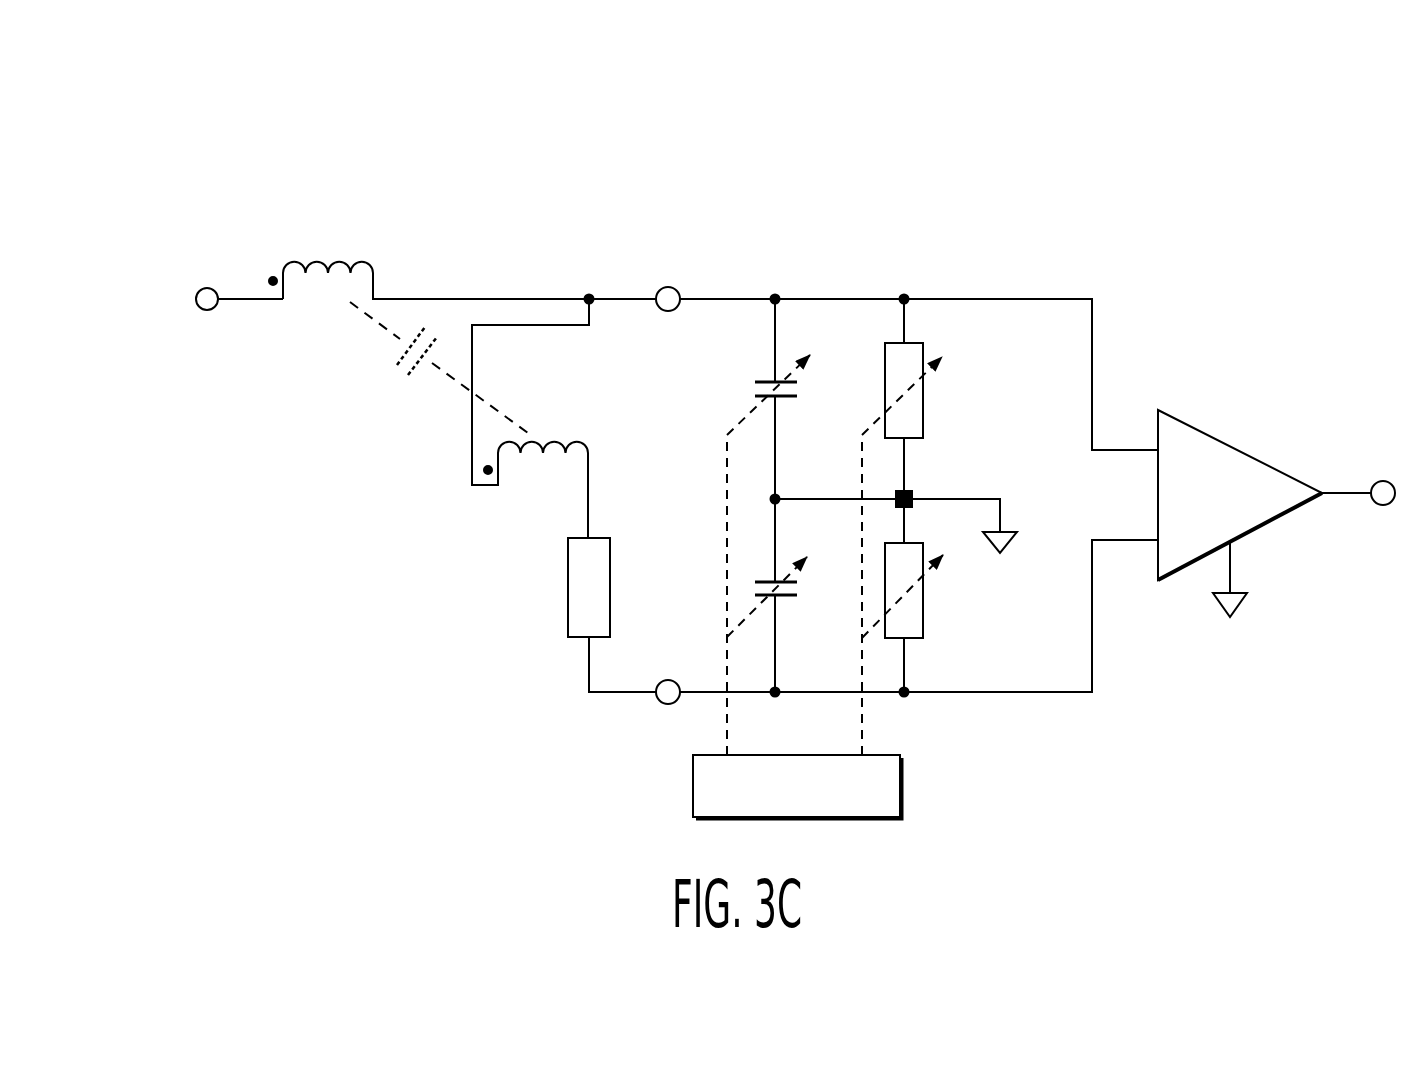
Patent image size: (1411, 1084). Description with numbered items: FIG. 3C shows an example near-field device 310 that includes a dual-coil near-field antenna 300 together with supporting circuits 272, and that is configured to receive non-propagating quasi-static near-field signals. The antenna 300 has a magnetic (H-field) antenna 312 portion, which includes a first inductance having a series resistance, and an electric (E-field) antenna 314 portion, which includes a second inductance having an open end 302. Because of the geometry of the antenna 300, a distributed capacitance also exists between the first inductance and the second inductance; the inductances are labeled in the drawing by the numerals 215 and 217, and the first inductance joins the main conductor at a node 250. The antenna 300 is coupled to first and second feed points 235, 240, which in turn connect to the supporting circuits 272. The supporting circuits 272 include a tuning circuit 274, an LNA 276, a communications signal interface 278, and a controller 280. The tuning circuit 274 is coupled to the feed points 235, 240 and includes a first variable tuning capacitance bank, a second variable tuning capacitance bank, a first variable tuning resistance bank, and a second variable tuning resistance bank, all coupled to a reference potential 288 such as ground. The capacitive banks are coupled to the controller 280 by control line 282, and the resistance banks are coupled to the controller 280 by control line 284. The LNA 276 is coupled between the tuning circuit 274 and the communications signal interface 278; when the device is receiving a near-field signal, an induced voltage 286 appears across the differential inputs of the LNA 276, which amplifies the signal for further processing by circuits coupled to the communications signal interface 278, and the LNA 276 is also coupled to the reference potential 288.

The near-field device 310 is at (165, 135).
The open end 302 is at (205, 288).
The dual-coil near-field antenna 300 is at (698, 160).
The electric (E-field) antenna portion 314 is at (412, 290).
The inductor L2 217 is at (360, 263).
The magnetic (H-field) antenna portion 312 is at (640, 290).
The node 250 is at (589, 297).
The inductor L1 215 is at (555, 443).
The second feed point 240 is at (670, 311).
The first feed point 235 is at (668, 680).
The supporting circuits 272 is at (1362, 160).
The tuning circuit 274 is at (950, 290).
The control line 282 is at (727, 490).
The control line 284 is at (862, 455).
The reference potential 288 is at (1007, 553).
The induced voltage 286 is at (1072, 478).
The LNA 276 is at (1230, 440).
The communications signal interface 278 is at (1385, 481).
The controller 280 is at (693, 785).